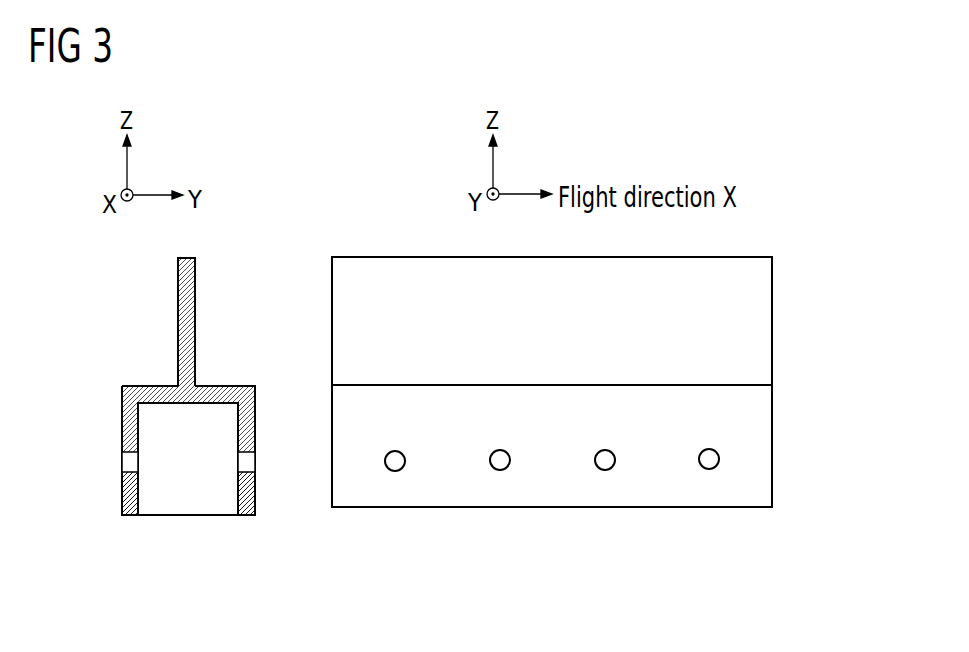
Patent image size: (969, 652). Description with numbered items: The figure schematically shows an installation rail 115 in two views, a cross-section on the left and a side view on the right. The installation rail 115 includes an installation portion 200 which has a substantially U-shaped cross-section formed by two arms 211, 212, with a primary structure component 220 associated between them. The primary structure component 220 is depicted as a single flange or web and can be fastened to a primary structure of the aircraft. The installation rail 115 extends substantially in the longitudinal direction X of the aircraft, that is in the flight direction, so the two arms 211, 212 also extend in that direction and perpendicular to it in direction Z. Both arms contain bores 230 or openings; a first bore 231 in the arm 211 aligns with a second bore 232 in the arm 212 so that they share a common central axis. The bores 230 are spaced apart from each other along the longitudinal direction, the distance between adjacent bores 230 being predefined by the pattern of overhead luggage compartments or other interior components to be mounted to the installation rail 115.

The installation portion 200 is at (108, 419).
The primary structure component 220 is at (196, 318).
The installation rail 115 is at (128, 386).
The arm 211 is at (131, 516).
The arm 212 is at (245, 516).
The first bore 231 is at (122, 462).
The second bore 232 is at (256, 462).
The bores 230 is at (496, 453).